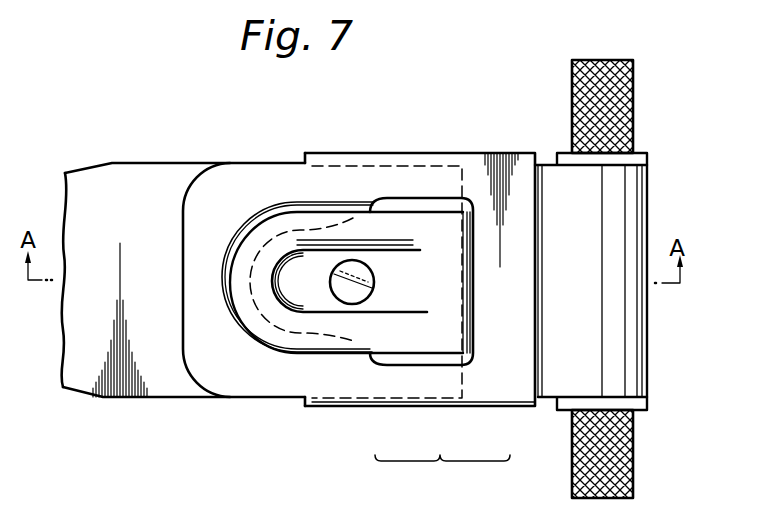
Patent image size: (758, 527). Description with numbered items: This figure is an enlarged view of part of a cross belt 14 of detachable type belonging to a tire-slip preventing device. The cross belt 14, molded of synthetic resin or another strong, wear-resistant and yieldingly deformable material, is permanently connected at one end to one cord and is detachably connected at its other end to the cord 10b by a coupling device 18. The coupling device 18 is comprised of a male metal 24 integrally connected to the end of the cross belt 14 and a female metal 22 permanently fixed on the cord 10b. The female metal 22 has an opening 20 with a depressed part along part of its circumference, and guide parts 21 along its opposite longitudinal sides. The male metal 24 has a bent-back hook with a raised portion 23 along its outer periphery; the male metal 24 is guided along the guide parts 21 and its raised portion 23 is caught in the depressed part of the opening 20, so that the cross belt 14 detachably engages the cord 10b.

The cord 10b is at (618, 102).
The cross belt 14 is at (146, 360).
The coupling device 18 is at (442, 474).
The opening 20 is at (433, 205).
The guide parts 21 is at (316, 153).
The female metal 22 is at (512, 322).
The raised portion 23 is at (258, 345).
The male metal 24 is at (415, 286).